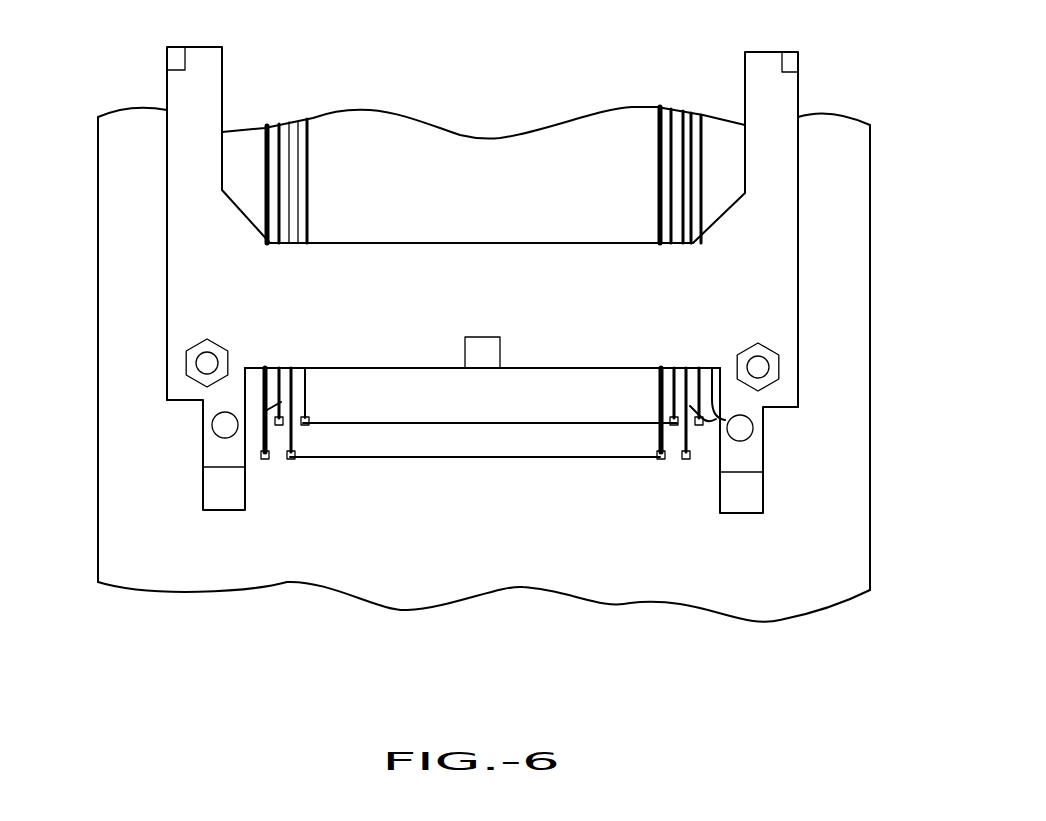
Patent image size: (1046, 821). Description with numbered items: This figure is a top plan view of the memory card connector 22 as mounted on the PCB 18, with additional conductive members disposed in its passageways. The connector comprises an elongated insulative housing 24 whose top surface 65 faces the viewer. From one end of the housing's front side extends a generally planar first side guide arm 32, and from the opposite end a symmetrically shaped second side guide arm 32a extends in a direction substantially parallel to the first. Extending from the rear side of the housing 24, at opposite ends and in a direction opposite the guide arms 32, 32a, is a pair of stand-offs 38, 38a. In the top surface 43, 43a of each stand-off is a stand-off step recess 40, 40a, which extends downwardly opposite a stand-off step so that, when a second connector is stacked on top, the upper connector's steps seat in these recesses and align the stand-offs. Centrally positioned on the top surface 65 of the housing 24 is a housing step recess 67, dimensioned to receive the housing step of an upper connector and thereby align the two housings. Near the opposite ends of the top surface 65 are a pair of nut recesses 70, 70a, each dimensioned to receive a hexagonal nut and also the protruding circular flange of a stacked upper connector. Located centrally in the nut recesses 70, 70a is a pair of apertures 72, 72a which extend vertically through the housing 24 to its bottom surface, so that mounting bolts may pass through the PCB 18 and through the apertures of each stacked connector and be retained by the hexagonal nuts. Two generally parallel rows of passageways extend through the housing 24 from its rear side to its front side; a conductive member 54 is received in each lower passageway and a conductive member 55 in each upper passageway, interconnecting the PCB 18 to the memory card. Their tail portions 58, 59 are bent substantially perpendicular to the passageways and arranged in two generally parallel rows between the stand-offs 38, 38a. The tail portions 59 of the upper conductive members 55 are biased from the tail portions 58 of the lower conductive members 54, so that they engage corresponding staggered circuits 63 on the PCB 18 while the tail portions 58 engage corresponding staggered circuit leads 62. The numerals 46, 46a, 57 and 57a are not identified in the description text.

The PCB 18 is at (874, 230).
The memory card connector 22 is at (163, 238).
The elongated insulative housing 24 is at (423, 378).
The first side guide arm 32 is at (167, 188).
The second side guide arm 32a is at (807, 140).
The stand-off 38 is at (198, 436).
The stand-off 38a is at (765, 460).
The stand-off step recess 40 is at (226, 488).
The stand-off step recess 40a is at (743, 497).
The top surface of stand-off 43 is at (218, 455).
The top surface of stand-off 43a is at (749, 456).
The locating pin 46 is at (212, 420).
The locating pin 46a is at (753, 440).
The conductive member 54 is at (715, 408).
The conductive member 55 is at (680, 437).
The notch 57 is at (178, 58).
The notch 57a is at (790, 62).
The tail portion 58 is at (765, 423).
The tail portion 59 is at (688, 462).
The staggered circuit leads 62 is at (705, 143).
The staggered circuits 63 is at (655, 108).
The top surface of housing 65 is at (362, 370).
The housing step recess 67 is at (490, 338).
The nut recess 70 is at (197, 345).
The nut recess 70a is at (777, 347).
The aperture 72 is at (200, 362).
The aperture 72a is at (770, 367).